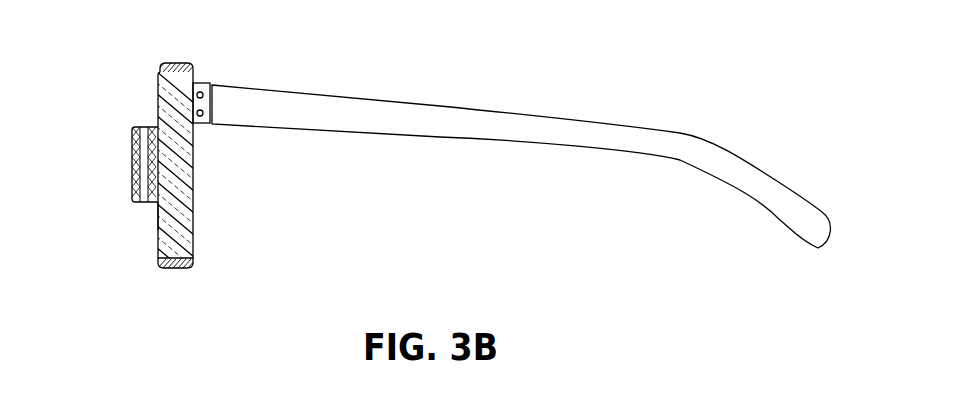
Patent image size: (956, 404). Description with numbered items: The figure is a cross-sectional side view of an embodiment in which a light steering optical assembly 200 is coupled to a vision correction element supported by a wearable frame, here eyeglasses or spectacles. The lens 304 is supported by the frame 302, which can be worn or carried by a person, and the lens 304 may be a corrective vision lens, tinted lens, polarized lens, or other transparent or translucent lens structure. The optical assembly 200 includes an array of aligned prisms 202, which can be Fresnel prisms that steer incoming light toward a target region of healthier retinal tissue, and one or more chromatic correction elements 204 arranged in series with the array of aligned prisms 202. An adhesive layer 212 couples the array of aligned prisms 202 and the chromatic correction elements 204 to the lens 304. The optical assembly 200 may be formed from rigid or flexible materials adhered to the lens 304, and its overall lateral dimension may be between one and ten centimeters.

The optical assembly 200 is at (96, 192).
The array of aligned prisms 202 is at (131, 143).
The chromatic correction elements 204 is at (164, 171).
The adhesive layer 212 is at (158, 205).
The frame 302 is at (180, 62).
The lens 304 is at (185, 78).